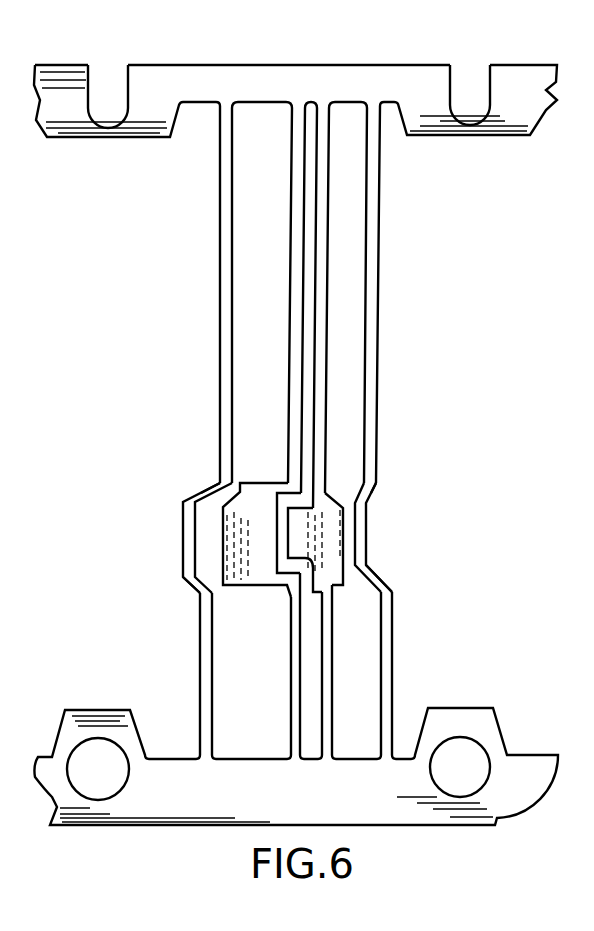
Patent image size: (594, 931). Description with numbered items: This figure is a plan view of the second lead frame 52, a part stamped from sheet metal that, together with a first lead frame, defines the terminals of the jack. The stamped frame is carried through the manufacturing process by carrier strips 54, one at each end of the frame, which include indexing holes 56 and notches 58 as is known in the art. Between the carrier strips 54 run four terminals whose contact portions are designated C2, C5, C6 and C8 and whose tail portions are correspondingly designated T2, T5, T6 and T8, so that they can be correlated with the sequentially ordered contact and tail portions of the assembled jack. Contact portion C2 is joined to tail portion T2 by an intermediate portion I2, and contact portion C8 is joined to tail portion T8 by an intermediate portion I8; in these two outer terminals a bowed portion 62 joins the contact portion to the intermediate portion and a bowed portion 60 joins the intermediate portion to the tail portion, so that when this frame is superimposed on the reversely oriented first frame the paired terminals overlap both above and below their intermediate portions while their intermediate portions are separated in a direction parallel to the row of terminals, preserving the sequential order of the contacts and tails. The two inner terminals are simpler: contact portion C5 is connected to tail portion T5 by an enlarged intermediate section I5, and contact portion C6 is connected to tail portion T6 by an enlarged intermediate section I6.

The second lead frame 52 is at (462, 368).
The carrier strip 54 is at (512, 130).
The indexing hole 56 is at (100, 740).
The notch 58 is at (88, 82).
The bowed portion 60 is at (192, 590).
The bowed portion 62 is at (210, 490).
The contact portion C2 is at (218, 255).
The contact portion C5 is at (298, 300).
The contact portion C6 is at (322, 348).
The contact portion C8 is at (373, 292).
The intermediate portion I2 is at (184, 522).
The enlarged intermediate section I5 is at (243, 543).
The enlarged intermediate section I6 is at (322, 552).
The intermediate portion I8 is at (366, 525).
The tail portion T2 is at (200, 632).
The tail portion T5 is at (297, 650).
The tail portion T6 is at (328, 678).
The tail portion T8 is at (392, 630).